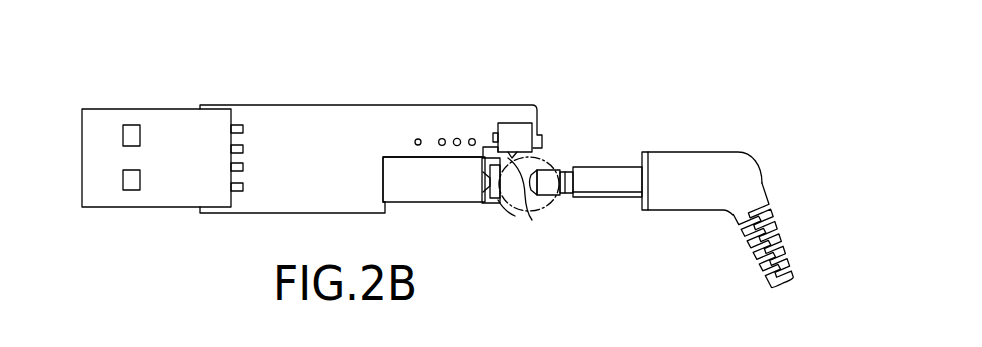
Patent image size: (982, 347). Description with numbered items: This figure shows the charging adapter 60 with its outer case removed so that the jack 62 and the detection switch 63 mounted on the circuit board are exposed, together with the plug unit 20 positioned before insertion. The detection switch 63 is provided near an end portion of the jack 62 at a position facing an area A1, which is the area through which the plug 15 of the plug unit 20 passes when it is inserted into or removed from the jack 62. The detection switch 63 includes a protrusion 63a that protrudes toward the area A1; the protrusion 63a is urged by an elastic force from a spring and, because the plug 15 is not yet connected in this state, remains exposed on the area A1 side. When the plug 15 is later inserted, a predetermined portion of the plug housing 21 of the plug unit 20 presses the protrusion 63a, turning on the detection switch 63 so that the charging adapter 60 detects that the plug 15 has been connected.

The charging adapter 60 is at (317, 90).
The jack 62 is at (487, 204).
The detection switch 63 is at (518, 130).
The protrusion 63a is at (521, 212).
The area A1 is at (546, 161).
The plug 15 is at (608, 178).
The plug unit 20 is at (678, 133).
The plug housing 21 is at (725, 157).